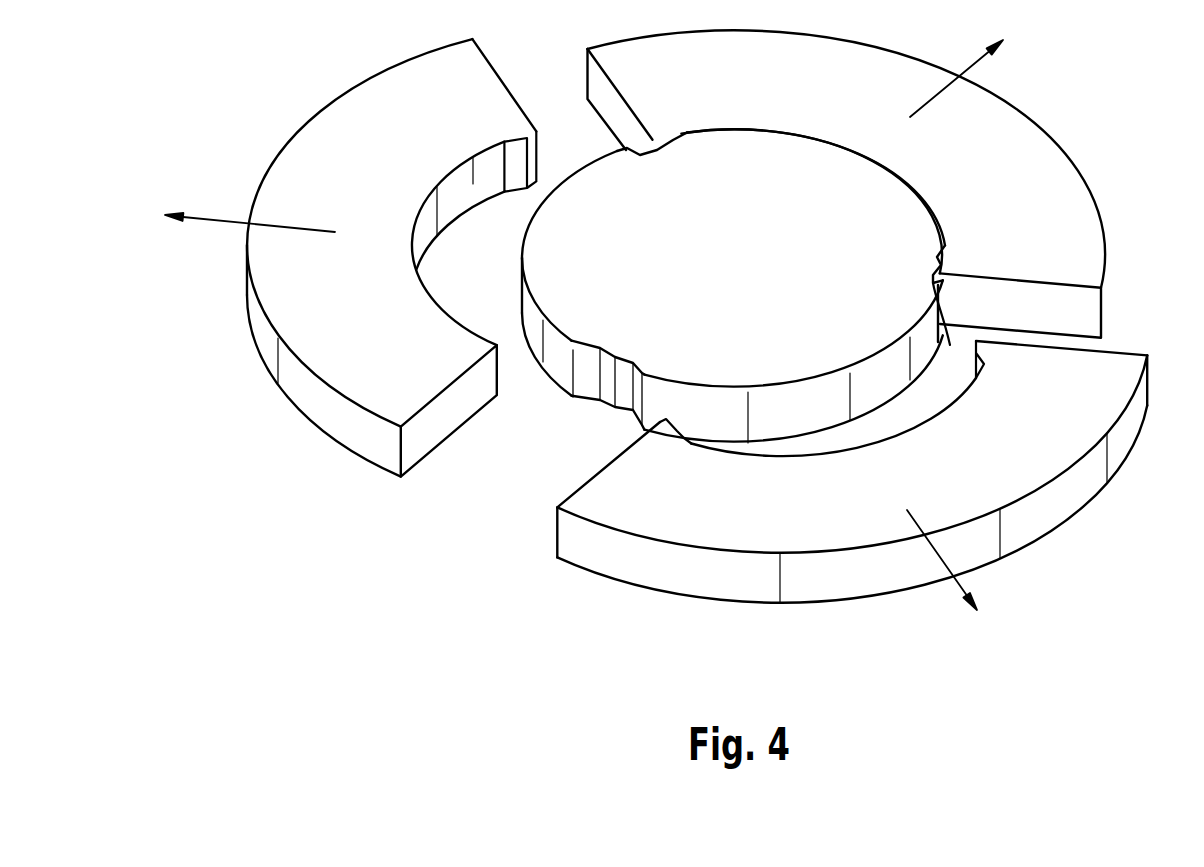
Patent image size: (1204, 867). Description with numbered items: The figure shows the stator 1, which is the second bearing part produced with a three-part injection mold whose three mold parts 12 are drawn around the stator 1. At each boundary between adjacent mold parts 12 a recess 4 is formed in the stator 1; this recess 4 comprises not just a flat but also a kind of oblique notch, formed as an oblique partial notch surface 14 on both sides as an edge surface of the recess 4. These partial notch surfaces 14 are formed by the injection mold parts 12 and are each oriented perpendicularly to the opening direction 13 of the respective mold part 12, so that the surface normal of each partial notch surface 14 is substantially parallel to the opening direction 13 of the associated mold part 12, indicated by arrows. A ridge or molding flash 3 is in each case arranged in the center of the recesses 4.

The stator 1 is at (850, 210).
The molding flash 3 is at (623, 407).
The recess 4 is at (643, 150).
The injection mold part 12 is at (380, 120).
The opening direction 13 is at (228, 222).
The partial notch surface 14 is at (633, 157).